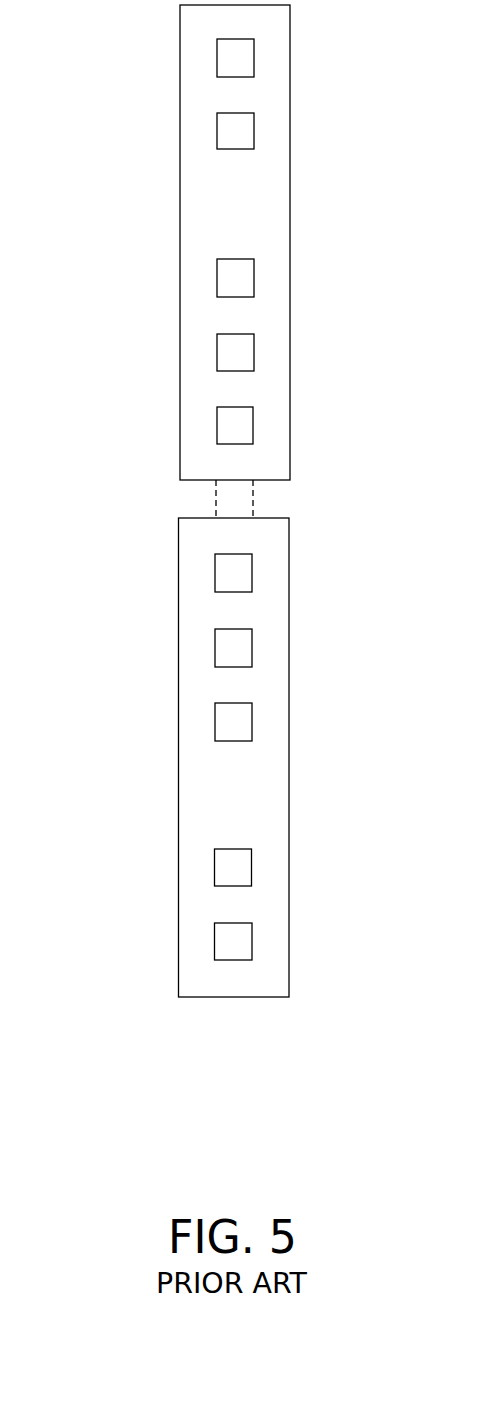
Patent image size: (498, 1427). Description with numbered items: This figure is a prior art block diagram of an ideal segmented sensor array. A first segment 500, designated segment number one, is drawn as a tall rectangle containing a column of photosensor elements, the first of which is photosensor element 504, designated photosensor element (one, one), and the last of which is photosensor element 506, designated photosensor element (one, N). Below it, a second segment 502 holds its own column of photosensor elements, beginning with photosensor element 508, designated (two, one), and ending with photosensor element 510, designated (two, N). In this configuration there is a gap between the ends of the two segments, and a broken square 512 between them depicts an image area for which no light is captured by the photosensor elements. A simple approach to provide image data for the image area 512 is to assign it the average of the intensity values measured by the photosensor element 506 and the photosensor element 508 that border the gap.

The first segment 500 is at (180, 112).
The second segment 502 is at (179, 637).
The photosensor element 504 is at (254, 59).
The photosensor element 506 is at (253, 427).
The photosensor element 508 is at (252, 574).
The photosensor element 510 is at (252, 940).
The image area 512 is at (215, 499).